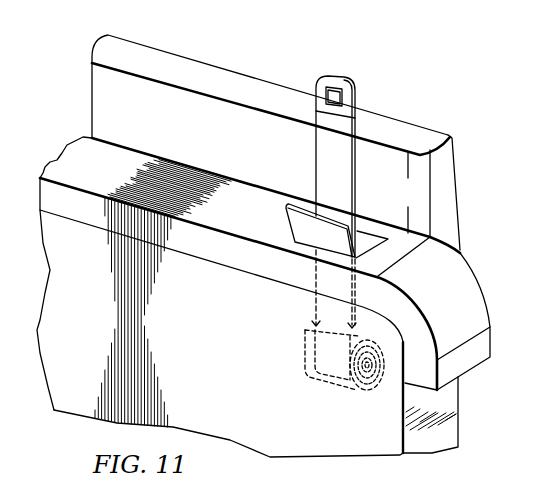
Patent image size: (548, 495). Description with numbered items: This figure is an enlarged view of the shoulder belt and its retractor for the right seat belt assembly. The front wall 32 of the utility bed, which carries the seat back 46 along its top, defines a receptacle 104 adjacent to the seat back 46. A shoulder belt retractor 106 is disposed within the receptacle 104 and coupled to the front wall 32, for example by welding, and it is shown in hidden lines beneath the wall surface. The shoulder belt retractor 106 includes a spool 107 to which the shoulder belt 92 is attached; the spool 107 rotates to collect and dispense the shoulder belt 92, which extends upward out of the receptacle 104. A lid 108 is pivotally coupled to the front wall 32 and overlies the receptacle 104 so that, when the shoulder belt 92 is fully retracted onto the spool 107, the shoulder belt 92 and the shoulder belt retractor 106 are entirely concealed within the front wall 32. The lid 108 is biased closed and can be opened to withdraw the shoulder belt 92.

The front wall 32 is at (127, 151).
The seat back 46 is at (192, 71).
The shoulder belt 92 is at (309, 164).
The receptacle 104 is at (366, 239).
The lid 108 is at (298, 229).
The shoulder belt retractor 106 is at (311, 388).
The spool 107 is at (374, 382).